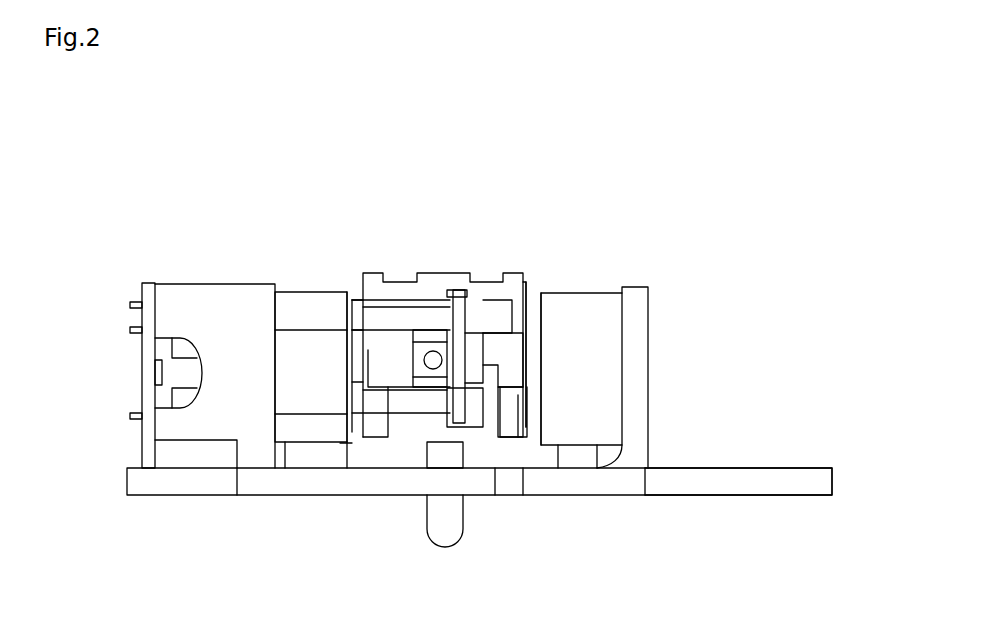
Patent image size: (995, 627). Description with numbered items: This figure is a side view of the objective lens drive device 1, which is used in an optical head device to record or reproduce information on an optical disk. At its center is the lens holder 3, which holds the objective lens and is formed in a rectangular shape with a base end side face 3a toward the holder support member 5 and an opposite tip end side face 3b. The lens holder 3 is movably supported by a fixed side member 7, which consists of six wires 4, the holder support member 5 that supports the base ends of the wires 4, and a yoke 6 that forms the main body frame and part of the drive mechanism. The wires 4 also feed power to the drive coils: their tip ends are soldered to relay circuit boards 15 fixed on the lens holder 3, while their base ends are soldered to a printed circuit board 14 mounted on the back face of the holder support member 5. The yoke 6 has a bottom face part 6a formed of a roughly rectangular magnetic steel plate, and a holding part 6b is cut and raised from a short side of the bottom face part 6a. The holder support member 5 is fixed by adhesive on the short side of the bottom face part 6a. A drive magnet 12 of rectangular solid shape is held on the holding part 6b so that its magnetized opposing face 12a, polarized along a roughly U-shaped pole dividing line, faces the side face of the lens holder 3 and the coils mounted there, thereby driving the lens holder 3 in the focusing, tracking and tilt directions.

The objective lens drive device 1 is at (718, 235).
The lens holder 3 is at (442, 275).
The base end side face 3a is at (355, 295).
The tip end side face 3b is at (532, 285).
The wires 4 is at (323, 303).
The holder support member 5 is at (221, 405).
The yoke 6 is at (255, 480).
The bottom face part 6a is at (766, 483).
The holding part 6b is at (633, 378).
The fixed side member 7 is at (296, 545).
The drive magnet 12 is at (308, 291).
The magnetized opposing face 12a is at (347, 290).
The printed circuit board 14 is at (137, 314).
The relay circuit board 15 is at (468, 292).